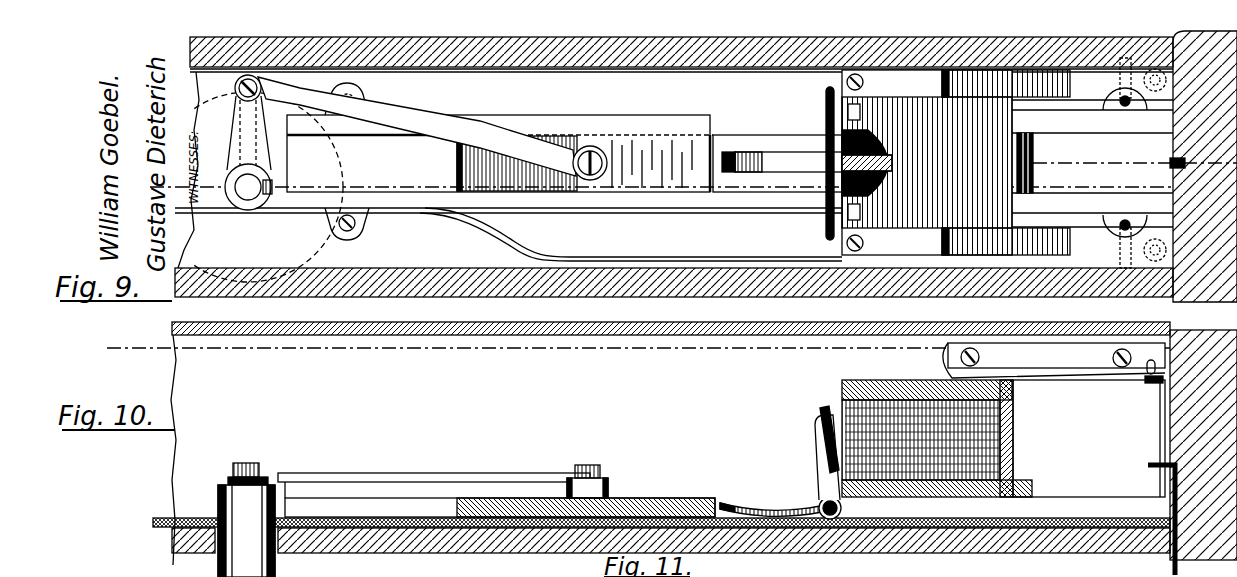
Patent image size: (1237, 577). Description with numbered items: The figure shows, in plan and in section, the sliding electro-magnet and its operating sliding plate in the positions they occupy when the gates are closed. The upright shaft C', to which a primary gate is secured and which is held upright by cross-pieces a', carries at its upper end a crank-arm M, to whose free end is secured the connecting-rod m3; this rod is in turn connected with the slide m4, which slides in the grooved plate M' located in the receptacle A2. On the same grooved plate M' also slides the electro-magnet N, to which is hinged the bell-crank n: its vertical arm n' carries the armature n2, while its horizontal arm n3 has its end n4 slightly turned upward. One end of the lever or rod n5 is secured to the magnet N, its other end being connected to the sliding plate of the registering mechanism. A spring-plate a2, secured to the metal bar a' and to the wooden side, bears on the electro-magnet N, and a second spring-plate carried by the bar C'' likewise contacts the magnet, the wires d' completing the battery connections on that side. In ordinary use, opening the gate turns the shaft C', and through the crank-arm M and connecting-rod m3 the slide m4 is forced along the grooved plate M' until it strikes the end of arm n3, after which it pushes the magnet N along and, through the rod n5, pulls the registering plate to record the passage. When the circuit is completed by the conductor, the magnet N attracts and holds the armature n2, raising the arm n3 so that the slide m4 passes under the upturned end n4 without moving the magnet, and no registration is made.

In FIG. 9, the receptacle A2 is at (693, 166).
In FIG. 10, the receptacle A2 is at (672, 443).
In FIG. 9, the cross-pieces / metal bar a' is at (508, 161).
In FIG. 10, the cross-pieces / metal bar a' is at (661, 546).
In FIG. 9, the lever or rod n5 is at (612, 258).
In FIG. 9, the shaft C' is at (248, 187).
In FIG. 10, the shaft C' is at (246, 552).
In FIG. 9, the crank-arm M is at (249, 122).
In FIG. 10, the crank-arm M is at (246, 520).
In FIG. 9, the grooved plate M' is at (564, 141).
In FIG. 10, the grooved plate M' is at (500, 499).
In FIG. 9, the slide (sliding plate) m4 is at (574, 163).
In FIG. 10, the slide (sliding plate) m4 is at (646, 498).
In FIG. 9, the connecting-rod m3 is at (432, 128).
In FIG. 10, the connecting-rod m3 is at (443, 476).
In FIG. 9, the end of horizontal arm n4 is at (734, 154).
In FIG. 10, the end of horizontal arm n4 is at (722, 503).
In FIG. 9, the horizontal arm of bell-crank n3 is at (788, 162).
In FIG. 10, the horizontal arm of bell-crank n3 is at (758, 505).
In FIG. 9, the armature n2 is at (825, 220).
In FIG. 10, the armature n2 is at (825, 410).
In FIG. 9, the electro-magnet N is at (1013, 162).
In FIG. 10, the electro-magnet N is at (1014, 440).
In FIG. 9, the bar C'' is at (1115, 163).
In FIG. 10, the bell-crank n is at (820, 498).
In FIG. 10, the vertical arm of bell-crank n' is at (815, 457).
In FIG. 10, the spring-plate a2 is at (1054, 372).
In FIG. 10, the wires d' is at (1147, 489).